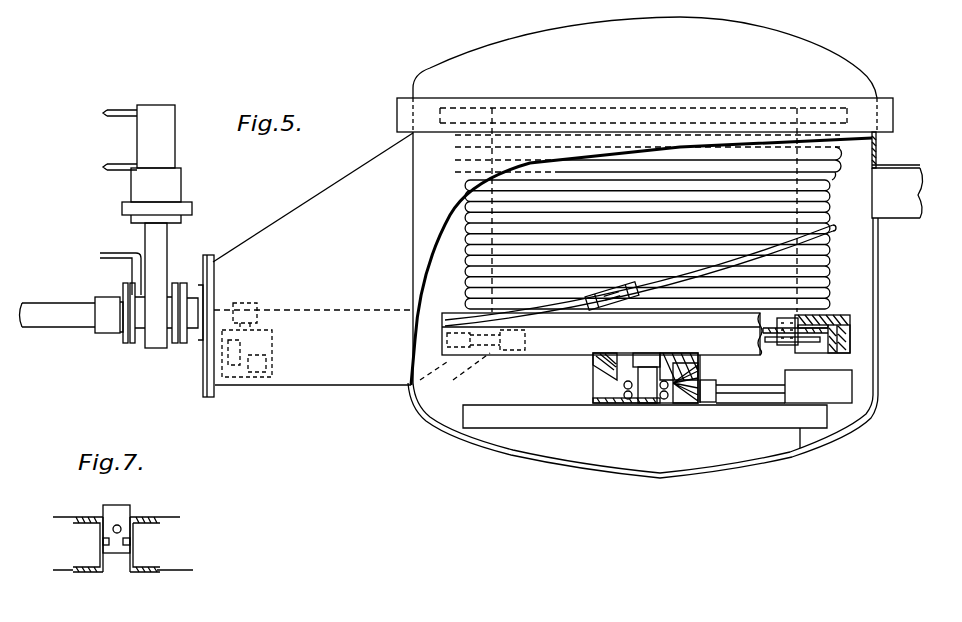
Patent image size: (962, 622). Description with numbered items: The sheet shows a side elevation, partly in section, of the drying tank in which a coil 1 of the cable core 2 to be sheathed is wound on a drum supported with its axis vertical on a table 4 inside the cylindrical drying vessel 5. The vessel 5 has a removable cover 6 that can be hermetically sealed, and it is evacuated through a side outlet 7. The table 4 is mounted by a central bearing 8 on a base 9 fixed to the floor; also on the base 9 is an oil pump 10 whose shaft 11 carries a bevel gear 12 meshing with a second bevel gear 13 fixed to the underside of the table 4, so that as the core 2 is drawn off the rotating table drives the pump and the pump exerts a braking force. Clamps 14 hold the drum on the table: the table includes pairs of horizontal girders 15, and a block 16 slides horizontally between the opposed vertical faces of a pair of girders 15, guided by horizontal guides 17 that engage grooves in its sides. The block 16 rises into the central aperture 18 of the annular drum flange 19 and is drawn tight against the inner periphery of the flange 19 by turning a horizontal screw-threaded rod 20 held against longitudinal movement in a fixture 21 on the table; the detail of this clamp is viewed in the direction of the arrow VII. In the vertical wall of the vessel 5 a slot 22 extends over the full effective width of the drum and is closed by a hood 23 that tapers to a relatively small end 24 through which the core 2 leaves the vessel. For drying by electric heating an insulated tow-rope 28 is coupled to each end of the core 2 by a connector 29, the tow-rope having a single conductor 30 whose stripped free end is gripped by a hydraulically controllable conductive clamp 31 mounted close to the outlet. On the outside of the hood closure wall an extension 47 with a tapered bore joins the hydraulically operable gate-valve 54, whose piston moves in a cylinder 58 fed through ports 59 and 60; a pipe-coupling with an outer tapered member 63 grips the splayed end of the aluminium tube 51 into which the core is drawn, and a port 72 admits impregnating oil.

In FIG. 5, the coil 1 is at (823, 178).
In FIG. 5, the cable core 2 is at (873, 232).
In FIG. 5, the table 4 is at (547, 350).
In FIG. 5, the drying vessel 5 is at (876, 148).
In FIG. 5, the cover 6 is at (805, 55).
In FIG. 5, the side outlet 7 is at (897, 186).
In FIG. 5, the central bearing 8 is at (673, 377).
In FIG. 5, the base 9 is at (750, 418).
In FIG. 5, the oil pump 10 is at (835, 390).
In FIG. 5, the shaft 11 is at (773, 390).
In FIG. 5, the bevel gear 12 is at (690, 403).
In FIG. 5, the second bevel gear 13 is at (600, 378).
In FIG. 5, the clamp 14 is at (418, 390).
In FIG. 5, the horizontal girders 15 is at (827, 353).
In FIG. 7, the horizontal girders 15 is at (150, 516).
In FIG. 5, the block 16 is at (800, 315).
In FIG. 7, the block 16 is at (125, 508).
In FIG. 5, the horizontal guides 17 is at (770, 343).
In FIG. 7, the horizontal guides 17 is at (103, 541).
In FIG. 5, the central aperture 18 is at (785, 313).
In FIG. 5, the drum flange 19 is at (825, 313).
In FIG. 5, the screw-threaded rod 20 is at (850, 317).
In FIG. 7, the screw-threaded rod 20 is at (112, 529).
In FIG. 5, the fixture 21 is at (403, 384).
In FIG. 5, the slot 22 is at (415, 185).
In FIG. 5, the hood 23 is at (323, 206).
In FIG. 5, the small end 24 is at (213, 262).
In FIG. 5, the insulated tow-rope 28 is at (527, 307).
In FIG. 5, the connector 29 is at (627, 288).
In FIG. 5, the conductor 30 is at (266, 312).
In FIG. 5, the clamp 31 is at (270, 345).
In FIG. 5, the extension 47 is at (188, 320).
In FIG. 5, the aluminium tube 51 is at (45, 300).
In FIG. 5, the gate-valve 54 is at (170, 262).
In FIG. 5, the cylinder 58 is at (165, 130).
In FIG. 5, the port 59 is at (108, 113).
In FIG. 5, the port 60 is at (108, 165).
In FIG. 5, the outer tapered member 63 is at (105, 322).
In FIG. 5, the port 72 is at (112, 253).
In FIG. 5, the arrow VII is at (853, 333).